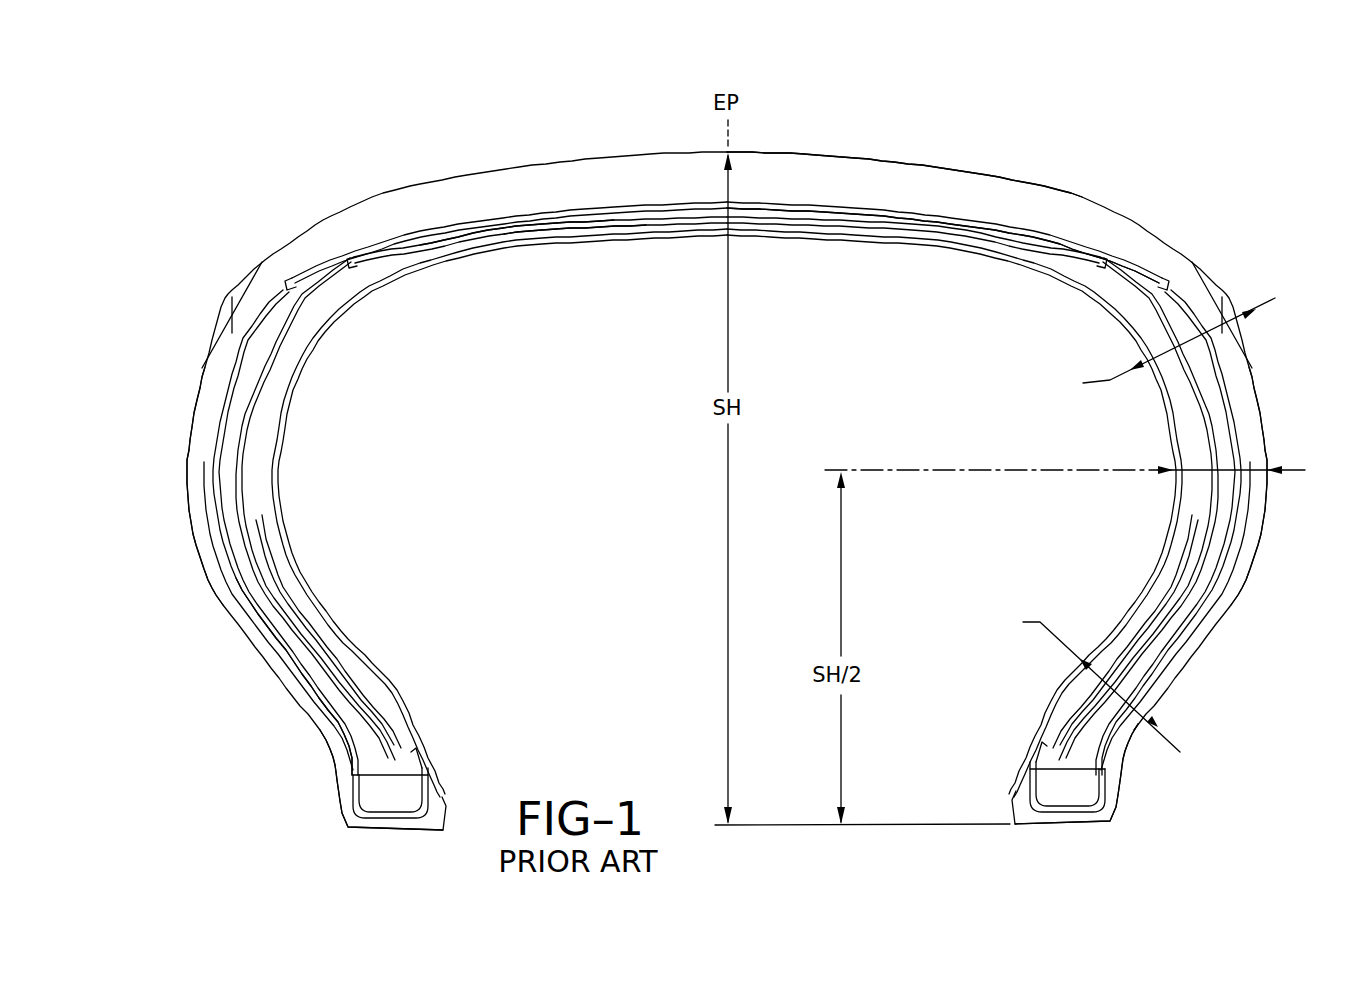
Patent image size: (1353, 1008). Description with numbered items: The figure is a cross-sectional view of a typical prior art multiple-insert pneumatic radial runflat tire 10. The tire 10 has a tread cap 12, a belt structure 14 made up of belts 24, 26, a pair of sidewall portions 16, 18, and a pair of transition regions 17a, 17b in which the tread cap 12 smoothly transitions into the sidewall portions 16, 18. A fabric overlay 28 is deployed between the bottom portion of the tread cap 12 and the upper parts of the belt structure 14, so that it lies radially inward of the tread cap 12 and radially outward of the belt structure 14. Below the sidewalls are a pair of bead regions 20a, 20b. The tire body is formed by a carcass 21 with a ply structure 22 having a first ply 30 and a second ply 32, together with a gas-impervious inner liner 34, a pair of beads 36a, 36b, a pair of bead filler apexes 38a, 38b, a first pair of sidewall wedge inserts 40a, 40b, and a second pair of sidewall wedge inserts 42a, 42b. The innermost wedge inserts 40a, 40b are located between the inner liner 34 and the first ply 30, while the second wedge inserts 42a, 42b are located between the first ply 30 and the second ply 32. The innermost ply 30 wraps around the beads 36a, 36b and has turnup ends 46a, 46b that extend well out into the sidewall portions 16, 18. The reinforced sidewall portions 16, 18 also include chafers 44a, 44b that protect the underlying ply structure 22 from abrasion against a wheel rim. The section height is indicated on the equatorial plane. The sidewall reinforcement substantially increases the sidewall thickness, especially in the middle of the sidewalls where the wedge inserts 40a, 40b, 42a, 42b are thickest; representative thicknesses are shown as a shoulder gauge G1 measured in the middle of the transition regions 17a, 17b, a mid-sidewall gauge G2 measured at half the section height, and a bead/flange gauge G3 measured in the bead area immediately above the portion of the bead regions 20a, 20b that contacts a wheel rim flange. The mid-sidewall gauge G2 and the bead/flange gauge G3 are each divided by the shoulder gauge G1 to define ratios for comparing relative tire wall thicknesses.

The pneumatic radial runflat tire 10 is at (310, 186).
The tread cap 12 is at (880, 178).
The belt structure 14 is at (957, 228).
The sidewall portion 16 is at (187, 453).
The transition region 17a is at (218, 333).
The transition region 17b is at (1225, 302).
The sidewall portion 18 is at (1267, 423).
The bead region 20a is at (353, 707).
The bead region 20b is at (1088, 735).
The carcass 21 is at (519, 235).
The ply structure 22 is at (584, 232).
The belt 24 is at (1038, 233).
The belt 26 is at (1124, 262).
The fabric overlay 28 is at (498, 217).
The first ply 30 is at (258, 380).
The second ply 32 is at (218, 402).
The inner liner 34 is at (278, 447).
The bead 36a is at (393, 792).
The bead 36b is at (1065, 783).
The bead filler apex 38a is at (290, 642).
The bead filler apex 38b is at (1175, 632).
The first sidewall wedge insert 40a is at (277, 560).
The first sidewall wedge insert 40b is at (1182, 548).
The second sidewall wedge insert 42a is at (236, 507).
The second sidewall wedge insert 42b is at (1218, 512).
The chafer 44a is at (343, 767).
The chafer 44b is at (1125, 742).
The turnup end 46a is at (218, 521).
The turnup end 46b is at (1222, 568).
The shoulder gauge G1 is at (1162, 346).
The mid-sidewall gauge G2 is at (1225, 466).
The bead/flange gauge G3 is at (1084, 681).